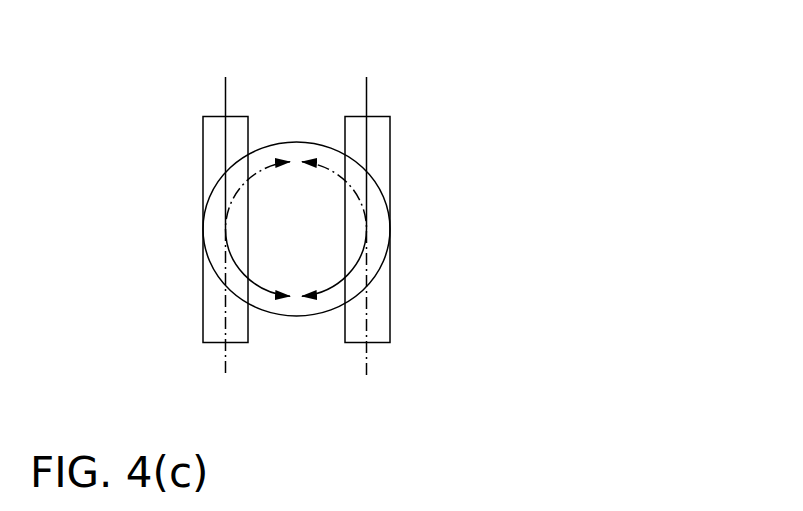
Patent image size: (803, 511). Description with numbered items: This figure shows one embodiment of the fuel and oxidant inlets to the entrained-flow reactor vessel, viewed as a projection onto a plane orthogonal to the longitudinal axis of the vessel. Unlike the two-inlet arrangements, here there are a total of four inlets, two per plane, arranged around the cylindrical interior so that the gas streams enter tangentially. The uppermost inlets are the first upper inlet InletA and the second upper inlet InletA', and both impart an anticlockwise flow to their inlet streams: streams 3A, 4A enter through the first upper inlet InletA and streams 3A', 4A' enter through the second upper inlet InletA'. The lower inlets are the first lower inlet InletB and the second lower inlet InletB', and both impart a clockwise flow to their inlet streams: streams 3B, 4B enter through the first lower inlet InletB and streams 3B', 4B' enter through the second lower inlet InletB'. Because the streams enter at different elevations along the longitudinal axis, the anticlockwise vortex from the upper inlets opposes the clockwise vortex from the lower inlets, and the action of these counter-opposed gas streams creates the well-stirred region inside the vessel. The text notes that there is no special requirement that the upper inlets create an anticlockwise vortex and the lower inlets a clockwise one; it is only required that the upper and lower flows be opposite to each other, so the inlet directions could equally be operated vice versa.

The stream 3A is at (232, 153).
The stream 4A is at (232, 153).
The stream 3B is at (359, 153).
The stream 4B is at (359, 153).
The stream 3A' is at (362, 299).
The stream 4A' is at (362, 299).
The stream 3B' is at (231, 299).
The stream 4B' is at (231, 299).
The Inlet A InletA is at (147, 233).
The Inlet B InletB is at (446, 230).
The Inlet A' InletA' is at (446, 248).
The Inlet B' InletB' is at (147, 250).